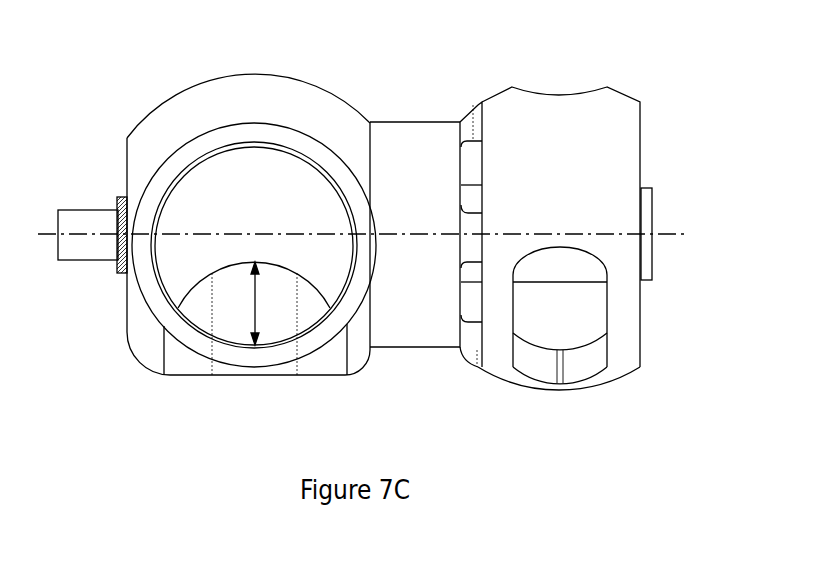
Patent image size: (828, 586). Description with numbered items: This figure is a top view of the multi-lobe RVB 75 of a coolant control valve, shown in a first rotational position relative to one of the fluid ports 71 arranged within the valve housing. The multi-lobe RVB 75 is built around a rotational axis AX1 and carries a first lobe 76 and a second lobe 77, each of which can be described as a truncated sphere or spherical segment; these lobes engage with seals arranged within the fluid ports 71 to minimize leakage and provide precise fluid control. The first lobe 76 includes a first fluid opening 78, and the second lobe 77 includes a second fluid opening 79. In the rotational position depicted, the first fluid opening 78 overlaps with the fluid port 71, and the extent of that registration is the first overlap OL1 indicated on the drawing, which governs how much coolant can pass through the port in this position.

The fluid port 71 is at (153, 190).
The multi-lobe RVB 75 is at (397, 113).
The first lobe 76 is at (168, 120).
The second lobe 77 is at (493, 110).
The first fluid opening 78 is at (195, 307).
The second fluid opening 79 is at (597, 313).
The rotational axis AX1 is at (678, 233).
The first overlap OL1 is at (257, 315).